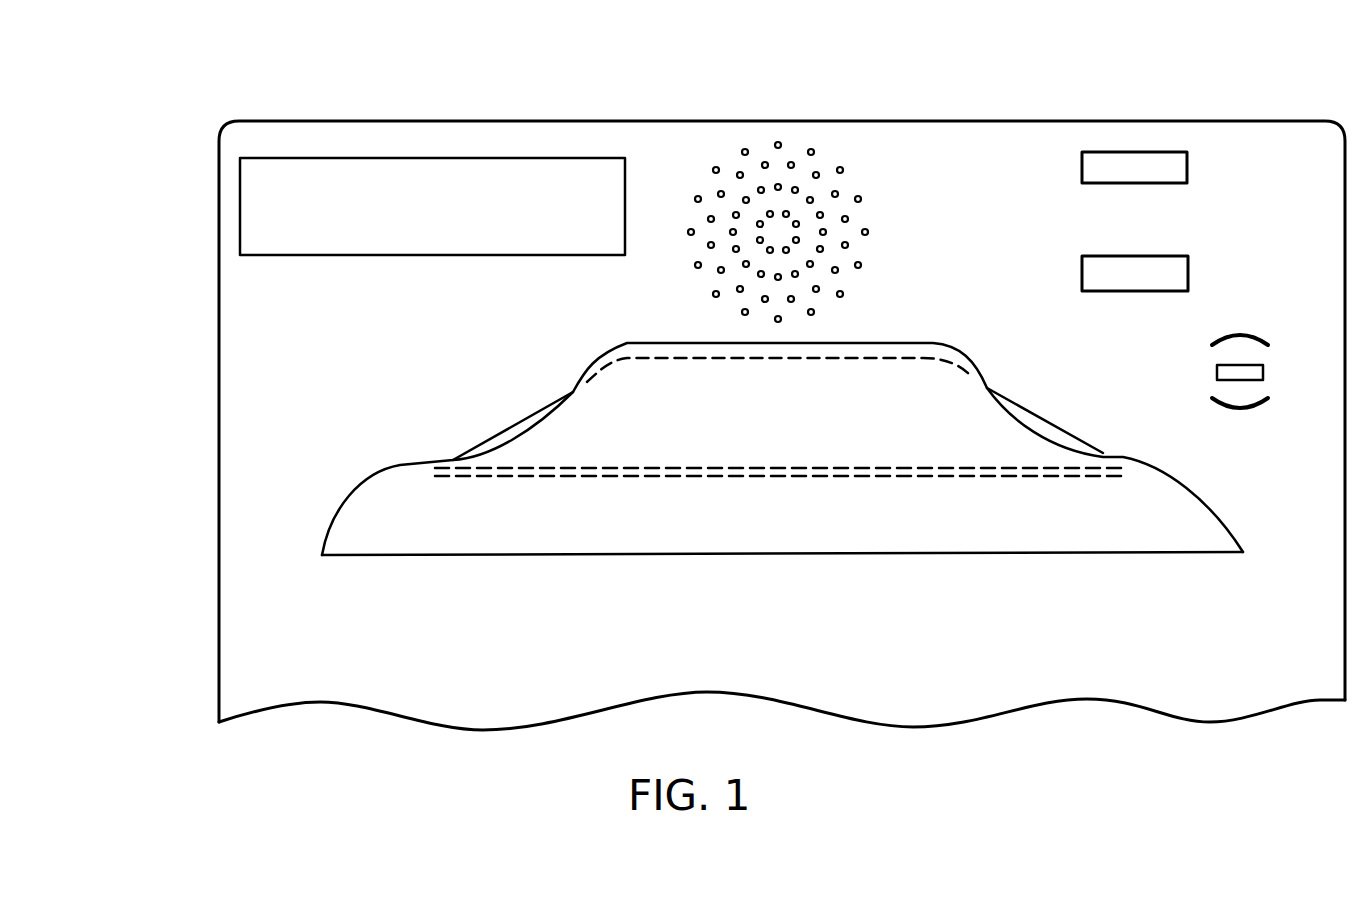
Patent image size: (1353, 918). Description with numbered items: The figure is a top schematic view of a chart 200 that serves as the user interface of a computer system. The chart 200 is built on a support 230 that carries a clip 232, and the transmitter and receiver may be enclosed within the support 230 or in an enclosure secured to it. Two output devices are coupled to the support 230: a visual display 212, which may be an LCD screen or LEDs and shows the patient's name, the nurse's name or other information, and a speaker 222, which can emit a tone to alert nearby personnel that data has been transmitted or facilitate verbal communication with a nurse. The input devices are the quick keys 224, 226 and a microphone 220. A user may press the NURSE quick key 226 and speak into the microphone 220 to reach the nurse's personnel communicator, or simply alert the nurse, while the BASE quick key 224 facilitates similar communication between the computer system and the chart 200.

The chart 200 is at (328, 33).
The visual display 212 is at (332, 158).
The microphone 220 is at (1237, 365).
The speaker 222 is at (802, 128).
The BASE quick key 224 is at (1190, 272).
The NURSE quick key 226 is at (1148, 152).
The support 230 is at (298, 378).
The clip 232 is at (425, 528).